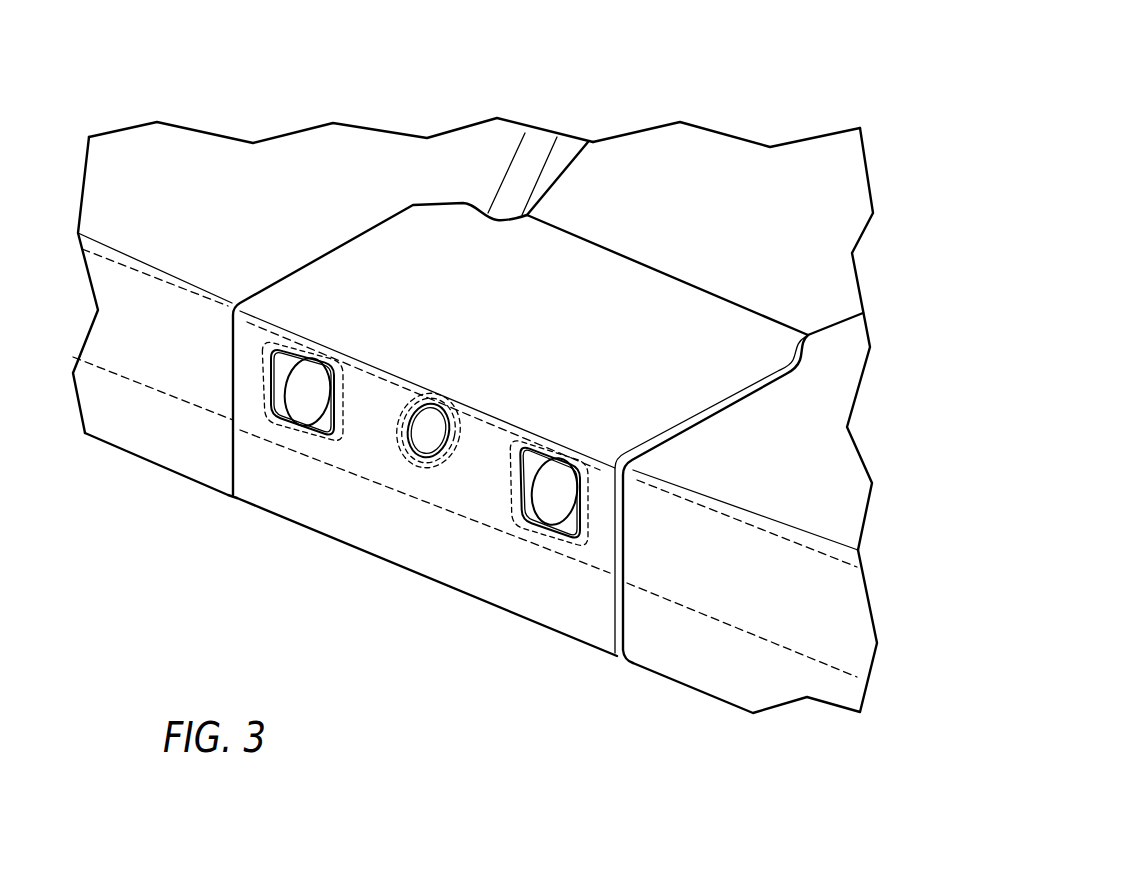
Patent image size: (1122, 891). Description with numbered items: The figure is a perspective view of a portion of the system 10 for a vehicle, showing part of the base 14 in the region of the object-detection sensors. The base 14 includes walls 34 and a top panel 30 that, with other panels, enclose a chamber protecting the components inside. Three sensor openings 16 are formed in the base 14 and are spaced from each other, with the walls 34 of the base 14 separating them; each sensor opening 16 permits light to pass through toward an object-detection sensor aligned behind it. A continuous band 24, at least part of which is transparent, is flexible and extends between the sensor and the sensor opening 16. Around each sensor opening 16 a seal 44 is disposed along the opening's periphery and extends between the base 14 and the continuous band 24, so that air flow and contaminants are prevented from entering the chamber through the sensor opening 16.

The system 10 is at (436, 640).
The base 14 is at (305, 157).
The sensor opening 16 is at (537, 511).
The continuous band 24 is at (184, 398).
The top panel 30 is at (710, 173).
The walls 34 is at (700, 653).
The seal 44 is at (343, 388).